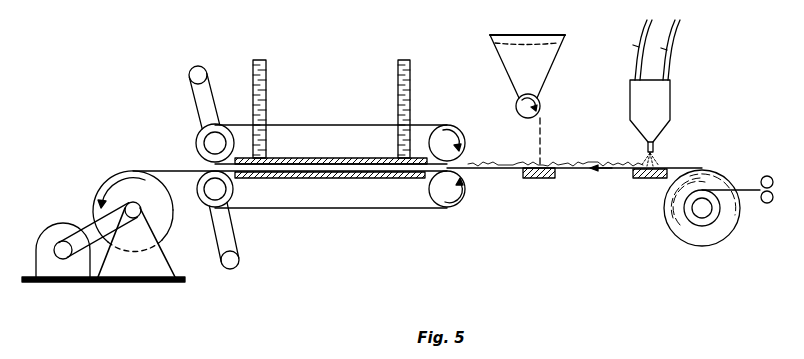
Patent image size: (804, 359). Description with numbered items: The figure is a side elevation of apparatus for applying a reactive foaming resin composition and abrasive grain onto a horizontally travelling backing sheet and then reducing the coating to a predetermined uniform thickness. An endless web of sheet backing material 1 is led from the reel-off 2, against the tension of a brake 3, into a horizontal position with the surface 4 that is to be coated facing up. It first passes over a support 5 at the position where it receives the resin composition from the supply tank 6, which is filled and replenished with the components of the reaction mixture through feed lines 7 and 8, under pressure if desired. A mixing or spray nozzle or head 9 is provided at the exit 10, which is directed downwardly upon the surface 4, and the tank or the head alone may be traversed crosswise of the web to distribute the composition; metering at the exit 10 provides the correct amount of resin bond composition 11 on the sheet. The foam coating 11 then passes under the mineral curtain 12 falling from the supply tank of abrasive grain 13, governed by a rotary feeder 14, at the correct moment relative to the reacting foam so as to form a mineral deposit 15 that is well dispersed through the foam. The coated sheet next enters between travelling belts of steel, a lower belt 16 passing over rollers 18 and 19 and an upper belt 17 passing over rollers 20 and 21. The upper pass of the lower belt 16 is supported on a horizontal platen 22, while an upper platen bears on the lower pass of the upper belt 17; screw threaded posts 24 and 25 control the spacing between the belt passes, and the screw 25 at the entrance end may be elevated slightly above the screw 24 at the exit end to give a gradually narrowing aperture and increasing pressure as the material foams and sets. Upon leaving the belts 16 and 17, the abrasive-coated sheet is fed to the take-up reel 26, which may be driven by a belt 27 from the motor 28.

The sheet backing material 1 is at (690, 167).
The reel-off 2 is at (682, 235).
The brake 3 is at (760, 182).
The surface 4 is at (670, 167).
The support 5 is at (645, 178).
The supply tank 6 is at (672, 92).
The feed line 7 is at (635, 67).
The feed line 8 is at (673, 45).
The spray nozzle or head 9 is at (655, 148).
The exit 10 is at (642, 157).
The resin bond composition 11 is at (567, 163).
The mineral curtain 12 is at (542, 128).
The supply tank of abrasive grain 13 is at (563, 43).
The rotary feeder 14 is at (517, 100).
The mineral deposit 15 is at (500, 162).
The lower belt 16 is at (340, 210).
The upper belt 17 is at (340, 123).
The roller 18 is at (203, 197).
The roller 19 is at (463, 200).
The roller 20 is at (197, 145).
The roller 21 is at (465, 140).
The horizontal platen 22 is at (378, 178).
The screw threaded post 24 is at (265, 83).
The screw threaded post 25 is at (398, 65).
The take-up reel 26 is at (123, 173).
The belt 27 is at (83, 220).
The motor 28 is at (42, 243).